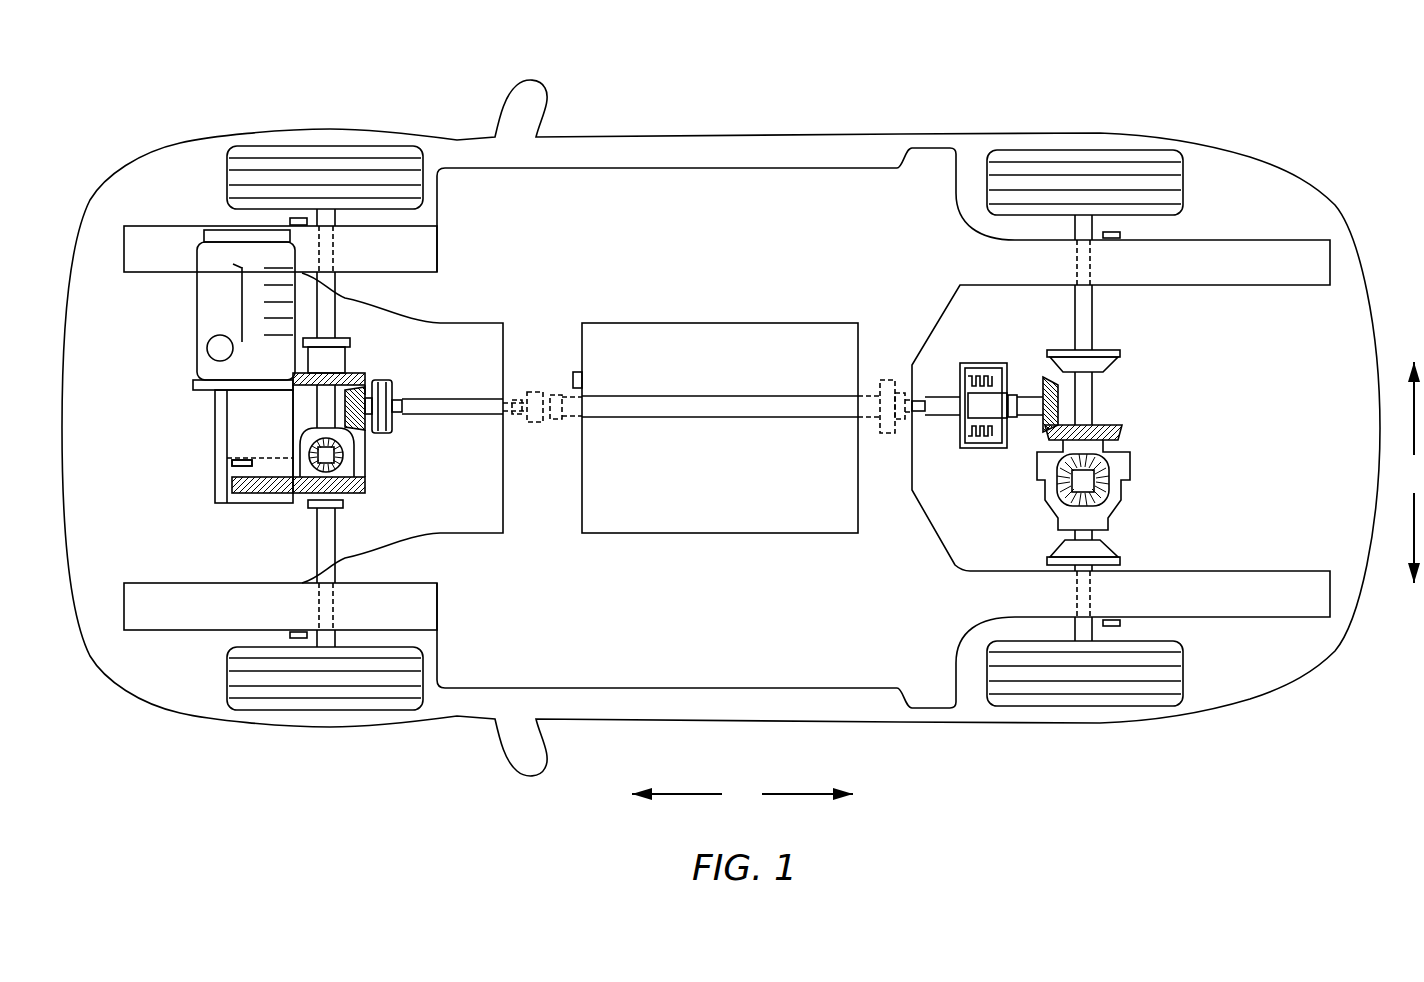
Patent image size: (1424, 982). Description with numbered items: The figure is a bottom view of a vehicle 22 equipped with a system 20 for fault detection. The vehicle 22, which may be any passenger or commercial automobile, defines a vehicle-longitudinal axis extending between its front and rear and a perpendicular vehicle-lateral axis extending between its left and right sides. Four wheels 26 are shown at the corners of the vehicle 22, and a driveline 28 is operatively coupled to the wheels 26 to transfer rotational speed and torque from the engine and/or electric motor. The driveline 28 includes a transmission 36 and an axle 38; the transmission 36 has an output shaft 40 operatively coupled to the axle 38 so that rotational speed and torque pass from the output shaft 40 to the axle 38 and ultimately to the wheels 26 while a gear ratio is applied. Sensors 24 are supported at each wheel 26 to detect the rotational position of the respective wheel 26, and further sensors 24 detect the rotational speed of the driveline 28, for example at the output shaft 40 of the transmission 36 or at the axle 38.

The system for fault detection 20 is at (800, 93).
The vehicle 22 is at (457, 139).
The sensor 24 is at (298, 217).
The wheel 26 is at (317, 146).
The driveline 28 is at (490, 282).
The transmission 36 is at (215, 430).
The axle 38 is at (757, 405).
The output shaft 40 is at (258, 458).